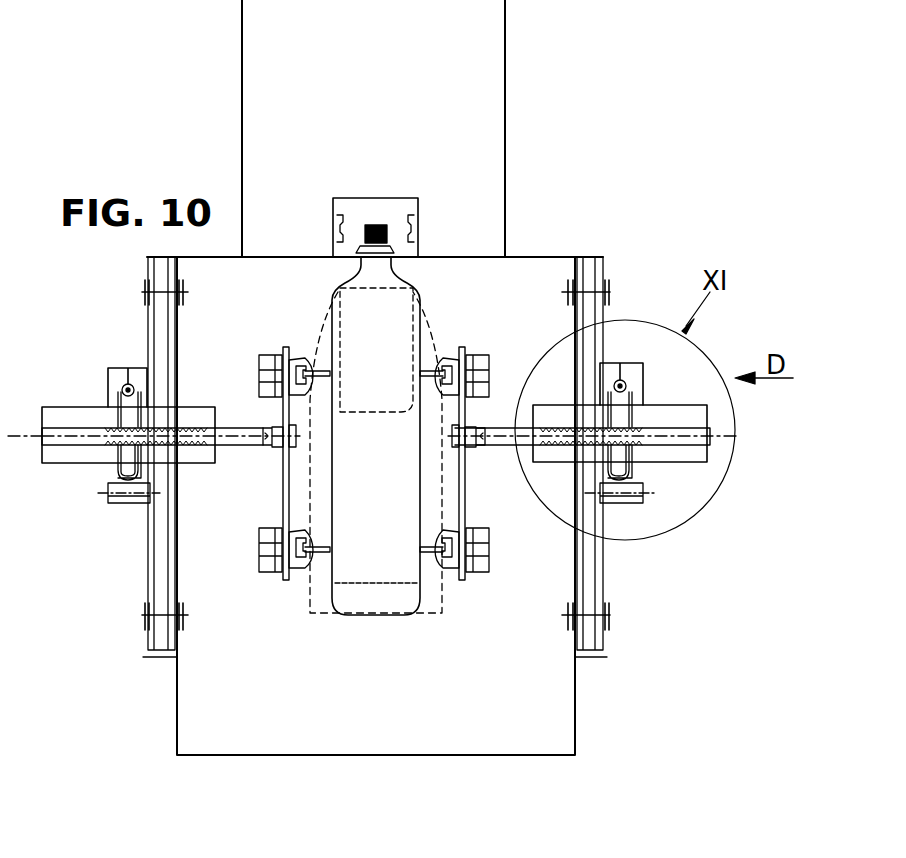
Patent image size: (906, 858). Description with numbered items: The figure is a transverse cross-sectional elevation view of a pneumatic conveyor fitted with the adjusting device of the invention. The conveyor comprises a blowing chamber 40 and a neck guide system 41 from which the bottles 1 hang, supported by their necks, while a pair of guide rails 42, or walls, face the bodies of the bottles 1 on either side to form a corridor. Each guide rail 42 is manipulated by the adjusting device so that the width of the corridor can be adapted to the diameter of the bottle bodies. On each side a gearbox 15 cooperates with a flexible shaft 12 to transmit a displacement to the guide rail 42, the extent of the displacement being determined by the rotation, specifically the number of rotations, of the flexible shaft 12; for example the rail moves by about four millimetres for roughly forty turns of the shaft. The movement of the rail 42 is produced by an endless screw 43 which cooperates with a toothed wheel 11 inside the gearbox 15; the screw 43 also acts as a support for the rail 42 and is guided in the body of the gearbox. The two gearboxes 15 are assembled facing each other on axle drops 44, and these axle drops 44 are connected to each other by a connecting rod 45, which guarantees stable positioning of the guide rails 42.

The bottle 1 is at (385, 326).
The toothed wheel 11 is at (128, 458).
The flexible shaft 12 is at (122, 389).
The gearbox 15 is at (100, 366).
The blowing chamber 40 is at (485, 48).
The neck guide system 41 is at (407, 264).
The guide rail 42 is at (287, 502).
The endless screw 43 is at (240, 440).
The axle drop 44 is at (165, 584).
The connecting rod 45 is at (220, 758).